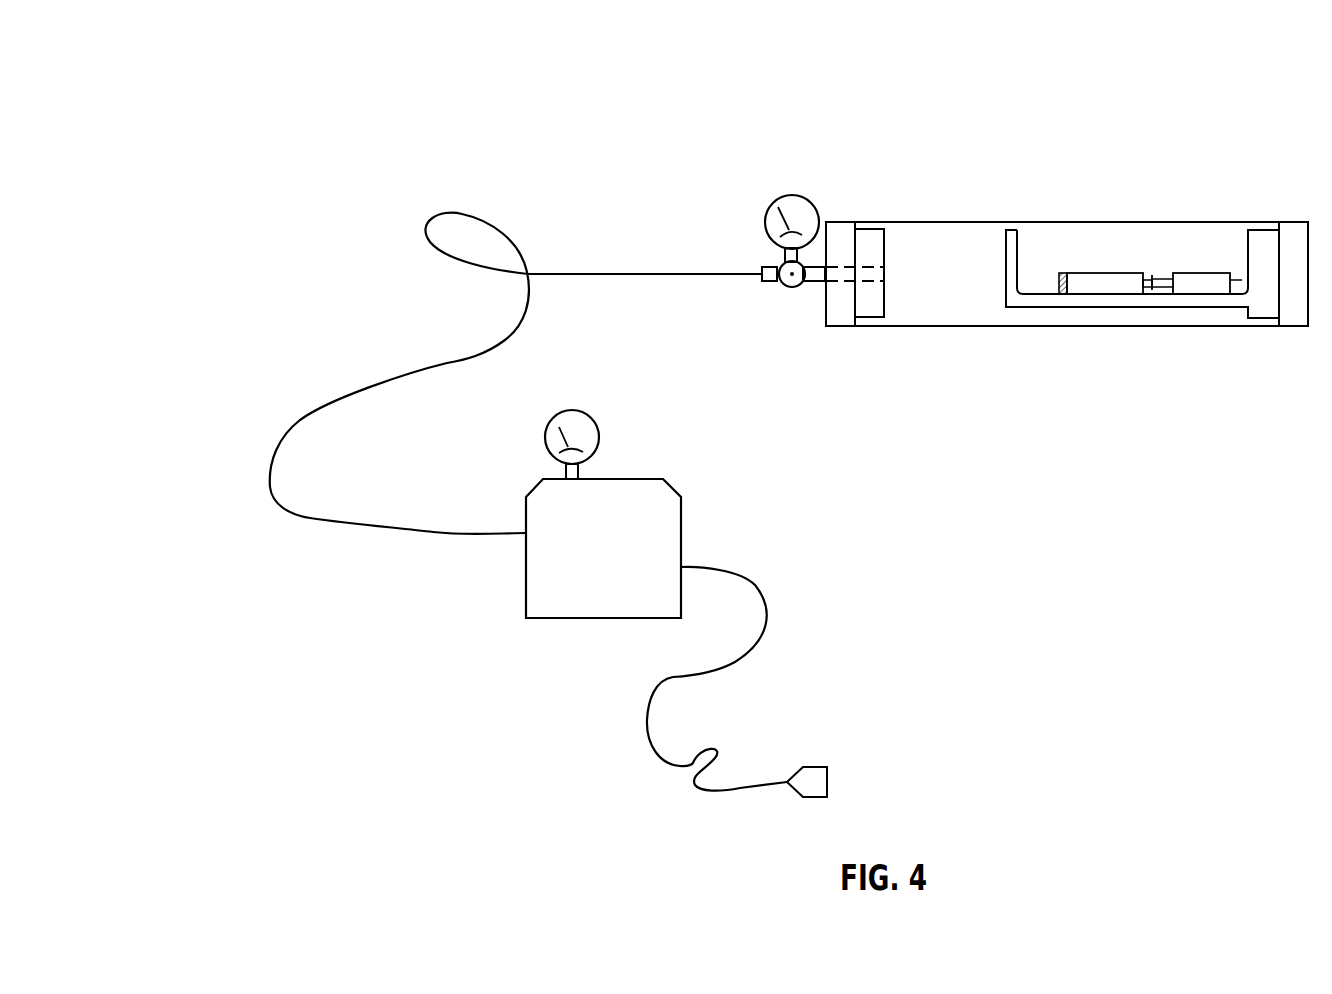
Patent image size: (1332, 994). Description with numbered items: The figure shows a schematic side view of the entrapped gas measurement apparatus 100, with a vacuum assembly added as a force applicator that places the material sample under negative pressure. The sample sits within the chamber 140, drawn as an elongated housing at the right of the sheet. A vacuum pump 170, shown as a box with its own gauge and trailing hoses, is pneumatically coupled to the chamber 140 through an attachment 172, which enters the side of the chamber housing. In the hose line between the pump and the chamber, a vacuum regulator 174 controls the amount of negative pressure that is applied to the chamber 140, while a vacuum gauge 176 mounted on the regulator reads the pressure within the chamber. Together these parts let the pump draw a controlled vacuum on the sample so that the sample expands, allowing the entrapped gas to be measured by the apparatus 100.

The entrapped gas measurement apparatus 100 is at (932, 96).
The chamber 140 is at (980, 212).
The vacuum pump 170 is at (584, 626).
The attachment 172 is at (812, 295).
The vacuum regulator 174 is at (789, 288).
The vacuum gauge 176 is at (779, 210).